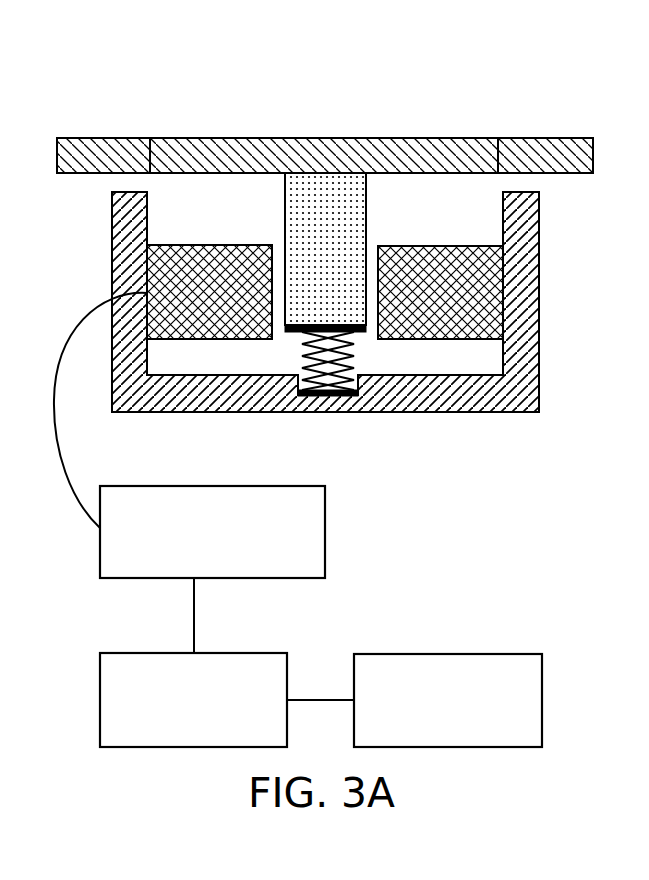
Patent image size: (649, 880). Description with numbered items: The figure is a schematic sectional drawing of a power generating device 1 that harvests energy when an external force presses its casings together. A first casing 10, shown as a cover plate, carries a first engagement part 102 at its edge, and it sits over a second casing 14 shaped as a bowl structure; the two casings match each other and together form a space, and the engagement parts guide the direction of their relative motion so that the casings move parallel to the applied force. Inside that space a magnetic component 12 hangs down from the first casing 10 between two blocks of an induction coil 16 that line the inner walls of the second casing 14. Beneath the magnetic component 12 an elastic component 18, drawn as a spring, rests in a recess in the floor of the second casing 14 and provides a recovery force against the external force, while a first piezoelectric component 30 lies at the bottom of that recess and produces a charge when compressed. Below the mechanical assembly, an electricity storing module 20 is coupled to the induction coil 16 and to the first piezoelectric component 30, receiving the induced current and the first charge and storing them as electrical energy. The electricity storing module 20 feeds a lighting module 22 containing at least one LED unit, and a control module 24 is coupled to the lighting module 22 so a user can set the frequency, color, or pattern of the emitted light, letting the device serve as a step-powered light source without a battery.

The power generating device 1 is at (120, 87).
The first casing 10 is at (337, 115).
The first engagement part 102 is at (534, 138).
The magnetic component 12 is at (367, 188).
The second casing 14 is at (540, 338).
The induction coil 16 is at (504, 276).
The elastic component 18 is at (358, 378).
The first piezoelectric component 30 is at (323, 397).
The electricity storing module 20 is at (326, 535).
The lighting module 22 is at (287, 653).
The control module 24 is at (542, 700).